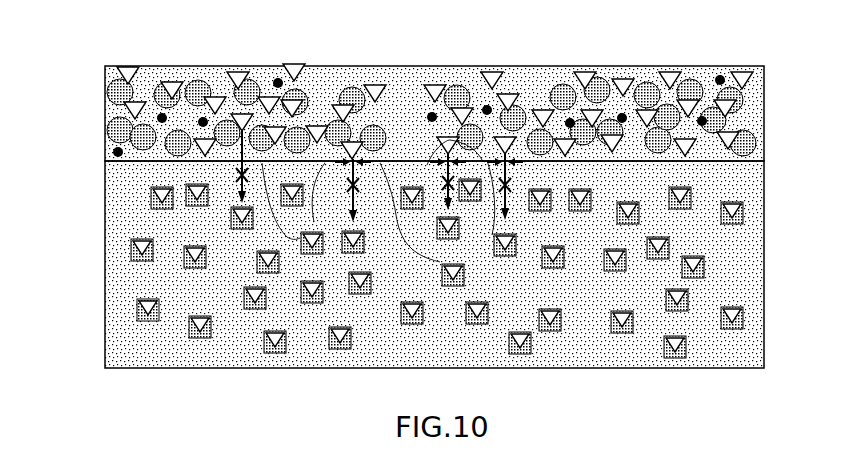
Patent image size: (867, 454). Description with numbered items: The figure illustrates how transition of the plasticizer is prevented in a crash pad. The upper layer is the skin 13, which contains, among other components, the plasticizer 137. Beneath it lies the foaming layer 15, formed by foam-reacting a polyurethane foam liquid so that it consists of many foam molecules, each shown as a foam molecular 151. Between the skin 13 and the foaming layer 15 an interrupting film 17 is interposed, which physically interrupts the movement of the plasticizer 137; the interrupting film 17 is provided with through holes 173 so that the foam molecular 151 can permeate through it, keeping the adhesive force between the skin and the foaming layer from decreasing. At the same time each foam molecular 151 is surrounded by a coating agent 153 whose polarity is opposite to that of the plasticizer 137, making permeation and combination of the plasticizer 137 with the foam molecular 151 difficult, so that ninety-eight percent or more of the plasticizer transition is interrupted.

The skin 13 is at (457, 88).
The foaming layer 15 is at (419, 249).
The interrupting film 17 is at (257, 168).
The plasticizer 137 is at (367, 74).
The through holes 173 is at (487, 128).
The foam molecular 151 is at (136, 311).
The coating agent 153 is at (140, 299).